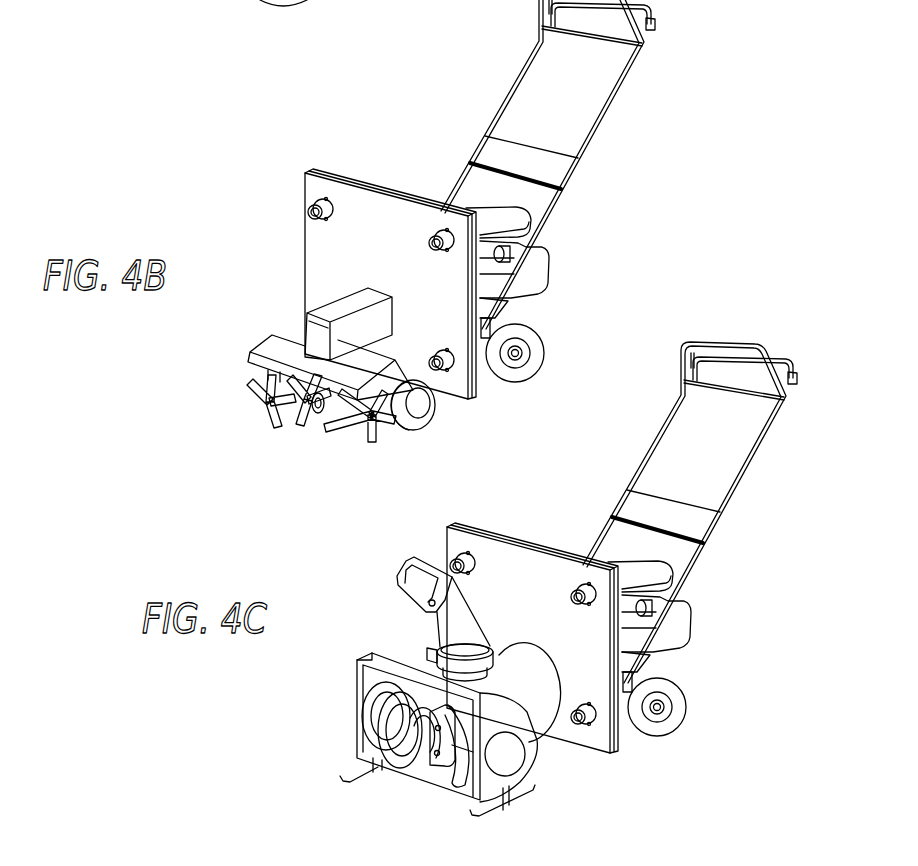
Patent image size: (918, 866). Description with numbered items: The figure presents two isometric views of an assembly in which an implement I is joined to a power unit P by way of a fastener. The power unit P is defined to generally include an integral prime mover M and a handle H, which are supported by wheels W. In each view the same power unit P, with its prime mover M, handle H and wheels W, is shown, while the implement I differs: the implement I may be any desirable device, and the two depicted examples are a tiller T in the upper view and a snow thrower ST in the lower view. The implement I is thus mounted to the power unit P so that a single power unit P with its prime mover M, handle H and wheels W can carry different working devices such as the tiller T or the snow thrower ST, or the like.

In FIG. 4B, the implement I is at (275, 267).
In FIG. 4C, the implement I is at (378, 620).
In FIG. 4B, the power unit P is at (628, 150).
In FIG. 4C, the power unit P is at (738, 569).
In FIG. 4B, the handle H is at (638, 60).
In FIG. 4C, the handle H is at (745, 480).
In FIG. 4B, the prime mover M is at (542, 268).
In FIG. 4C, the prime mover M is at (680, 623).
In FIG. 4B, the wheels W is at (538, 360).
In FIG. 4C, the wheels W is at (680, 717).
In FIG. 4B, the tiller T is at (275, 350).
In FIG. 4C, the snow thrower ST is at (357, 670).